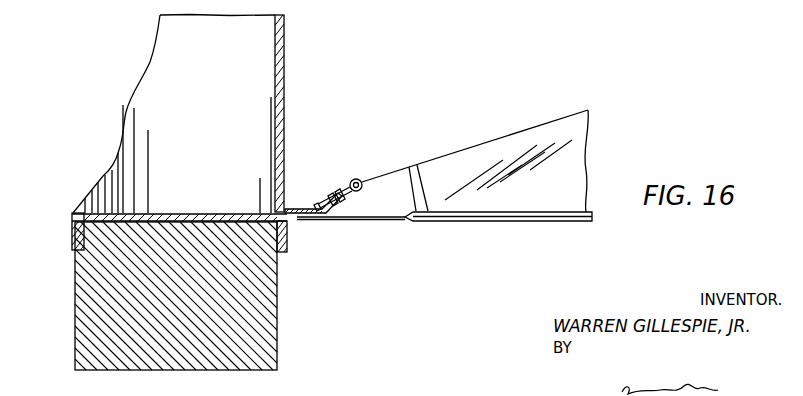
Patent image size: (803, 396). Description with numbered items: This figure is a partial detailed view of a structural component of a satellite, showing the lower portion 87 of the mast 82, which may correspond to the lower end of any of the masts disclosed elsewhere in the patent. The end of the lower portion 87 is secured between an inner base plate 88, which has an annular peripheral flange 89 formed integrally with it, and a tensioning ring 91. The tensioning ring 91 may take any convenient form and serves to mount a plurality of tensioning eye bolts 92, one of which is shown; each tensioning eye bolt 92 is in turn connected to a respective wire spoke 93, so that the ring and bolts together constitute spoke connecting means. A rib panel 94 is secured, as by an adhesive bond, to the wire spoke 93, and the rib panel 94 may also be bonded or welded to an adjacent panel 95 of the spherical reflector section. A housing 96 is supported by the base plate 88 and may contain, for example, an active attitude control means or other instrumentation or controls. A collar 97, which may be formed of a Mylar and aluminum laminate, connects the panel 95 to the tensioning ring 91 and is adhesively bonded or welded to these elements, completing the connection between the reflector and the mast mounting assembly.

The mast 82 is at (285, 62).
The lower portion of mast 87 is at (285, 137).
The inner base plate 88 is at (217, 214).
The annular peripheral flange 89 is at (78, 232).
The tensioning ring 91 is at (292, 210).
The tensioning eye bolt 92 is at (358, 179).
The wire spoke 93 is at (480, 148).
The rib panel 94 is at (561, 124).
The panel 95 is at (460, 222).
The housing 96 is at (278, 310).
The collar 97 is at (317, 222).